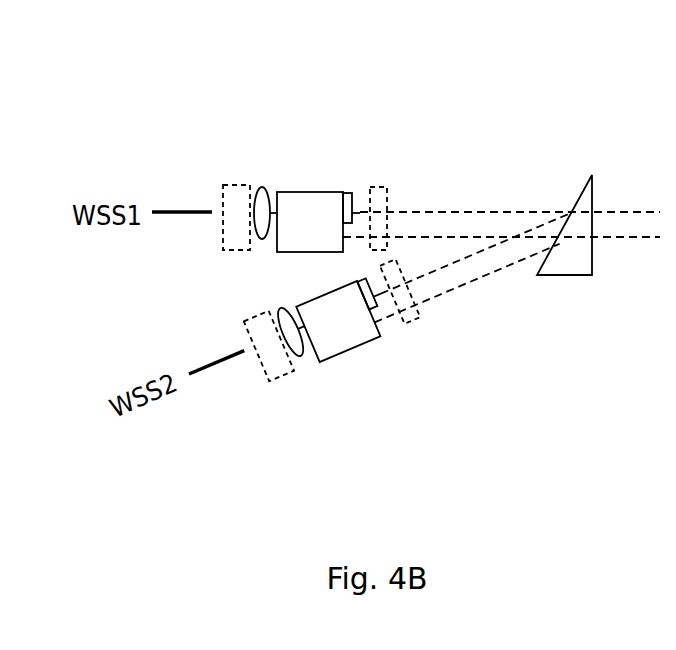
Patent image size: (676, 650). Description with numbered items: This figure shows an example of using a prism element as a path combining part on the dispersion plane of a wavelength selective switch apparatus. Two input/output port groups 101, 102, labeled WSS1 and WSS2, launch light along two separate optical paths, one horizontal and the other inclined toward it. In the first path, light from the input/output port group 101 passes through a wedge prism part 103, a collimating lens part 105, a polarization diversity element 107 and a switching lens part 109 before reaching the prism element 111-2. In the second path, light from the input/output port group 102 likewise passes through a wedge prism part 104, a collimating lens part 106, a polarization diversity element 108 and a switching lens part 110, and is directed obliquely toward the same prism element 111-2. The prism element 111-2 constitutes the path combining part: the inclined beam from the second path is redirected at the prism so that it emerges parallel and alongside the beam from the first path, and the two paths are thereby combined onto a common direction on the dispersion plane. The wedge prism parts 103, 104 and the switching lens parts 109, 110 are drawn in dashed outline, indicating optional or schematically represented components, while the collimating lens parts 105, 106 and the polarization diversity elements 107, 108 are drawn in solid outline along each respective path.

The input/output port group 101 is at (173, 203).
The input/output port group 102 is at (213, 372).
The wedge prism part 103 is at (232, 180).
The wedge prism part 104 is at (282, 383).
The collimating lens part 105 is at (260, 187).
The collimating lens part 106 is at (300, 363).
The polarization diversity element 107 is at (313, 185).
The polarization diversity element 108 is at (365, 352).
The switching lens part 109 is at (383, 183).
The switching lens part 110 is at (420, 328).
The prism element 111-2 is at (595, 167).